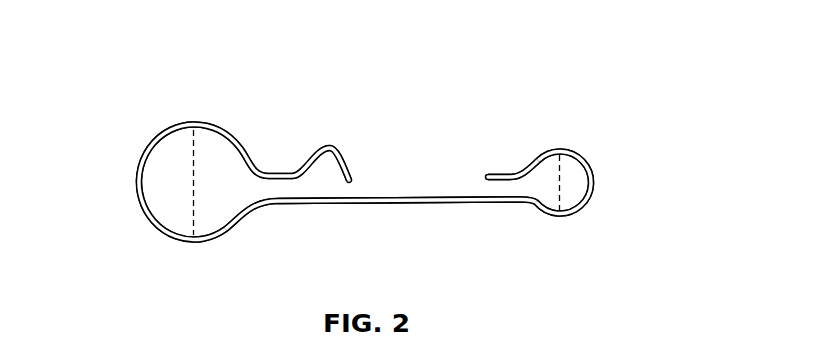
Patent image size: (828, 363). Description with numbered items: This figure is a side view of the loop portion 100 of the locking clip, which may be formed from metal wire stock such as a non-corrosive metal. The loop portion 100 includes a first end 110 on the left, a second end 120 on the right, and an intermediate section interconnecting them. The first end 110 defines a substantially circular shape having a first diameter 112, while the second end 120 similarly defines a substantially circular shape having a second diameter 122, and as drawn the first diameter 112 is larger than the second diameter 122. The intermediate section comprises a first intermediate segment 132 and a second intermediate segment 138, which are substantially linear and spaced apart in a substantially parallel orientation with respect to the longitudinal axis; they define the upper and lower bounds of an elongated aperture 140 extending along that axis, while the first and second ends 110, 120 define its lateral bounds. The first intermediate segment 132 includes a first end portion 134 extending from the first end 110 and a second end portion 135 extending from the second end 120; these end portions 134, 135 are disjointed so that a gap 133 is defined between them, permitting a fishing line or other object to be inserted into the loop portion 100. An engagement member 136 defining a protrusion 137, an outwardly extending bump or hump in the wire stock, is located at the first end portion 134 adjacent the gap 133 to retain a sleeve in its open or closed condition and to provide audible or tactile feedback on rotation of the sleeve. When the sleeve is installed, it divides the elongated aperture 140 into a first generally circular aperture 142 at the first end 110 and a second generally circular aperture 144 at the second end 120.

The loop portion 100 is at (580, 118).
The first end 110 is at (138, 205).
The first diameter 112 is at (193, 204).
The second end 120 is at (593, 195).
The second diameter 122 is at (560, 177).
The first intermediate segment 132 is at (515, 172).
The gap 133 is at (398, 176).
The first end portion 134 is at (281, 173).
The second end portion 135 is at (489, 172).
The engagement member 136 is at (317, 133).
The protrusion 137 is at (334, 143).
The second intermediate segment 138 is at (347, 205).
The elongated aperture 140 is at (500, 198).
The first generally circular aperture 142 is at (210, 218).
The second generally circular aperture 144 is at (547, 198).